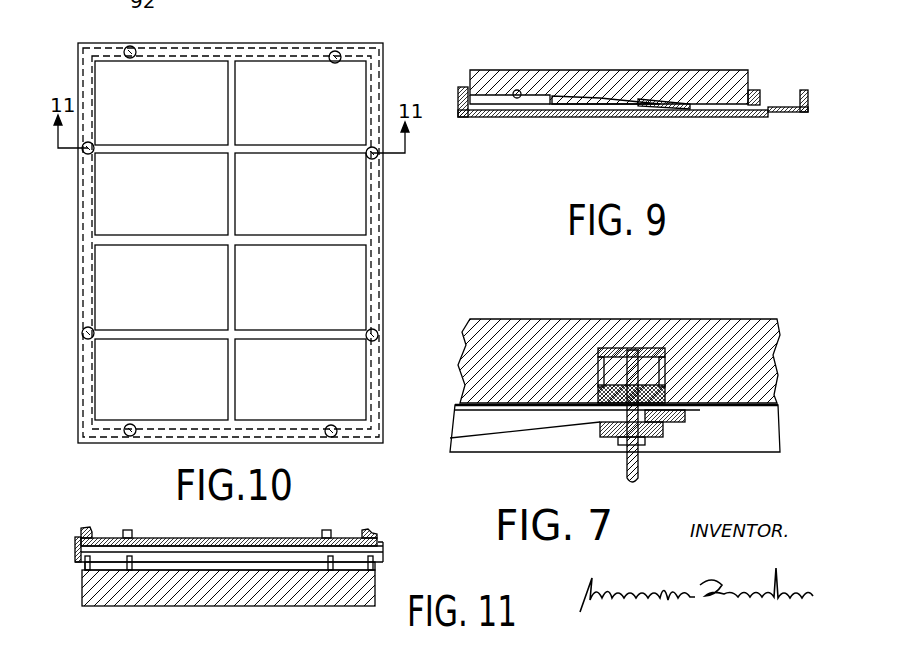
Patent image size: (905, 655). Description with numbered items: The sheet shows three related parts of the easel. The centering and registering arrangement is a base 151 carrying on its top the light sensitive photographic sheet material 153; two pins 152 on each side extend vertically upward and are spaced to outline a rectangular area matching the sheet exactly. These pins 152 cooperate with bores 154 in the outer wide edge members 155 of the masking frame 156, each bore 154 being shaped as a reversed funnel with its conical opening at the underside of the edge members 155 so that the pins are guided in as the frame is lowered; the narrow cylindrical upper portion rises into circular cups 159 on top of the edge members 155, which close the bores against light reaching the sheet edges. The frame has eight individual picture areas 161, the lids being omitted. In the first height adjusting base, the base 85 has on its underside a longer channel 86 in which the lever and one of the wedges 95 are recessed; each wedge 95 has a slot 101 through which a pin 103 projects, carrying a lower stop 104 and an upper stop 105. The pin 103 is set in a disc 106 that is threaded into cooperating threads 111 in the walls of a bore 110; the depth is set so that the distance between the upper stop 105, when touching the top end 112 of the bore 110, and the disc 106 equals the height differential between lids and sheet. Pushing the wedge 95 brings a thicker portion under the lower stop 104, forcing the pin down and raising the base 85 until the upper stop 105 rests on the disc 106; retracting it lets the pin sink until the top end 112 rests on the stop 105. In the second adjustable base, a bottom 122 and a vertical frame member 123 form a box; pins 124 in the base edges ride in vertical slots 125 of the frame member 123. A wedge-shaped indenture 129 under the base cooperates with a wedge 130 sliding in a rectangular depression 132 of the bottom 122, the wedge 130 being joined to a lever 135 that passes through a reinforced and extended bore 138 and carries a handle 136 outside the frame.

In FIG. 10, the base 151 is at (378, 410).
In FIG. 11, the base 151 is at (118, 606).
In FIG. 10, the pins 152 is at (378, 159).
In FIG. 11, the pins 152 is at (97, 564).
In FIG. 10, the light sensitive photographic sheet material 153 is at (383, 272).
In FIG. 11, the light sensitive photographic sheet material 153 is at (237, 570).
In FIG. 11, the bores 154 is at (128, 530).
In FIG. 10, the outer wide edge members 155 is at (80, 188).
In FIG. 11, the outer wide edge members 155 is at (82, 563).
In FIG. 10, the masking frame 156 is at (392, 230).
In FIG. 10, the circular cups 159 is at (378, 336).
In FIG. 11, the circular cups 159 is at (82, 532).
In FIG. 10, the individual picture areas 161 is at (140, 278).
In FIG. 9, the bottom 122 is at (506, 118).
In FIG. 9, the vertical frame member 123 is at (462, 87).
In FIG. 9, the pins 124 is at (515, 91).
In FIG. 9, the vertical slots 125 is at (533, 92).
In FIG. 9, the wedge-shaped indenture 129 is at (572, 102).
In FIG. 9, the wedge 130 is at (640, 110).
In FIG. 9, the rectangular depression 132 is at (558, 116).
In FIG. 9, the lever 135 is at (793, 114).
In FIG. 9, the handle 136 is at (803, 90).
In FIG. 9, the reinforced and extended bore 138 is at (766, 116).
In FIG. 7, the base 85 is at (560, 318).
In FIG. 7, the longer channel 86 is at (780, 428).
In FIG. 7, the wedges 95 is at (520, 438).
In FIG. 7, the slot 101 is at (560, 418).
In FIG. 7, the pins 103 is at (640, 462).
In FIG. 7, the lower stops 104 is at (665, 428).
In FIG. 7, the upper stops 105 is at (627, 348).
In FIG. 7, the disc 106 is at (665, 383).
In FIG. 7, the bore 110 is at (598, 362).
In FIG. 7, the cooperating threads 111 is at (598, 393).
In FIG. 7, the top end 112 is at (655, 348).